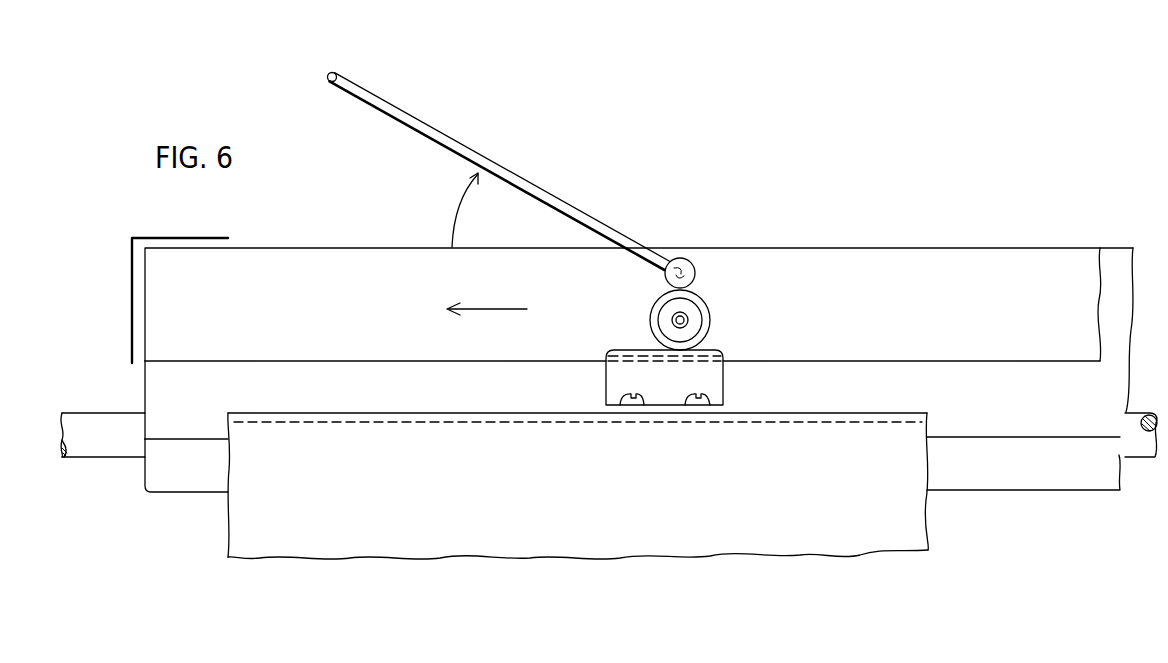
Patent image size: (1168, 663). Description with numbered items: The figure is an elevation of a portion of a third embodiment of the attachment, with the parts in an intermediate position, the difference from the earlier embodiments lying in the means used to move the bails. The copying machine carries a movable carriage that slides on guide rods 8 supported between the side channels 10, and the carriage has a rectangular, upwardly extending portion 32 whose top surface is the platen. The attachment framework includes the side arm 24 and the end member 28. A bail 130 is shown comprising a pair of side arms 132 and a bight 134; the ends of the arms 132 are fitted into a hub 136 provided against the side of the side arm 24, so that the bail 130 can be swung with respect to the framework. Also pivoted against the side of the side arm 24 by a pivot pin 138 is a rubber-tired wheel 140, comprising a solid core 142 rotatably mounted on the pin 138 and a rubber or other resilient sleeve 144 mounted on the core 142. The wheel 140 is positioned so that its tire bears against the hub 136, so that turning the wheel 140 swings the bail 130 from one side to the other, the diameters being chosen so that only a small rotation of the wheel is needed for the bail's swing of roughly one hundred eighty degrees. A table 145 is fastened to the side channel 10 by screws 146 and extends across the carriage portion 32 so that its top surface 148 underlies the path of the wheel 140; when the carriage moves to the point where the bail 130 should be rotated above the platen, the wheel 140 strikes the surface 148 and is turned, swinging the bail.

The guide rods 8 is at (108, 442).
The side channels 10 is at (511, 521).
The side arm 24 is at (978, 312).
The end member 28 is at (132, 279).
The upwardly extending portion of the carriage 32 is at (145, 391).
The bail 130 is at (519, 171).
The side arms of the bail 132 is at (438, 134).
The bight 134 is at (328, 75).
The hub 136 is at (694, 271).
The pivot pin 138 is at (690, 320).
The rubber-tired wheel 140 is at (680, 310).
The solid core 142 is at (706, 315).
The resilient sleeve 144 is at (701, 300).
The table 145 is at (712, 388).
The screws 146 is at (618, 396).
The top surface 148 is at (632, 350).